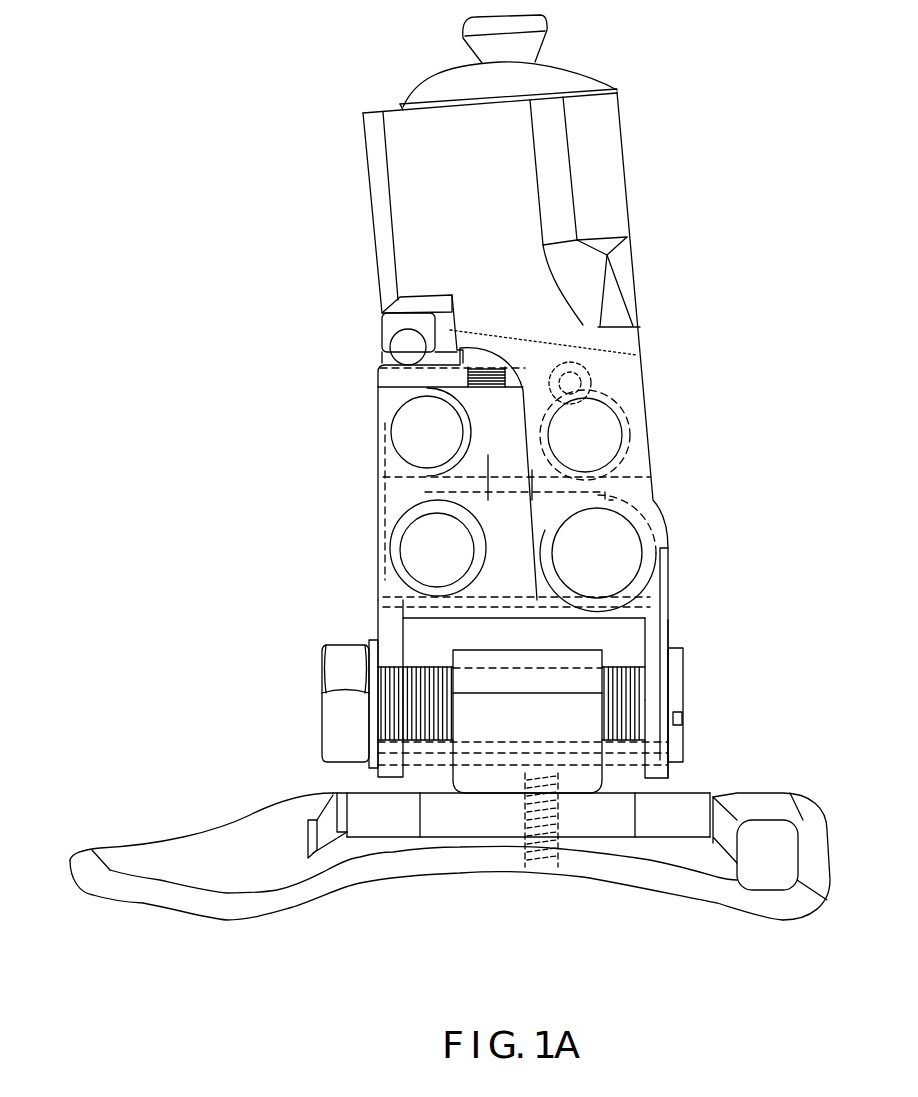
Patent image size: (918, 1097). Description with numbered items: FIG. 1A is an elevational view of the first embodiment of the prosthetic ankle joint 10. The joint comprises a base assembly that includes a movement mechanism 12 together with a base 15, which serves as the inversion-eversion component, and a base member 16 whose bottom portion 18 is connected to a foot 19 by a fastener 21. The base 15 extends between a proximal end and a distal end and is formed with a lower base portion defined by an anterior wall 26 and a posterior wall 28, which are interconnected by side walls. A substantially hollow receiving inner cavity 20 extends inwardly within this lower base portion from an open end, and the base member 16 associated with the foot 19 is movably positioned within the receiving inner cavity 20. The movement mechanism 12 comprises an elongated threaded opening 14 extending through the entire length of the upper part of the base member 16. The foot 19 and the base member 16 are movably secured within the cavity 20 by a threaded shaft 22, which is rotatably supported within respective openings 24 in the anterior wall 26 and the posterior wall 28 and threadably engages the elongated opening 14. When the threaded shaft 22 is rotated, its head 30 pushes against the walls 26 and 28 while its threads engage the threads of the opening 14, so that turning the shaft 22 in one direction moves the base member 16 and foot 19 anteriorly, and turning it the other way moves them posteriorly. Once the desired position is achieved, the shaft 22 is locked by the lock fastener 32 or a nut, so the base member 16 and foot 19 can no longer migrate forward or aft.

The prosthetic ankle joint 10 is at (705, 190).
The movement mechanism 12 is at (357, 617).
The elongated threaded opening 14 is at (473, 717).
The base 15 is at (668, 623).
The base member 16 is at (530, 715).
The bottom portion 18 is at (488, 817).
The foot 19 is at (170, 868).
The receiving inner cavity 20 is at (420, 642).
The fastener 21 is at (543, 857).
The threaded shaft 22 is at (620, 737).
The openings 24 is at (398, 740).
The anterior wall 26 is at (652, 643).
The posterior wall 28 is at (398, 642).
The head 30 is at (680, 742).
The lock fastener 32 is at (340, 713).